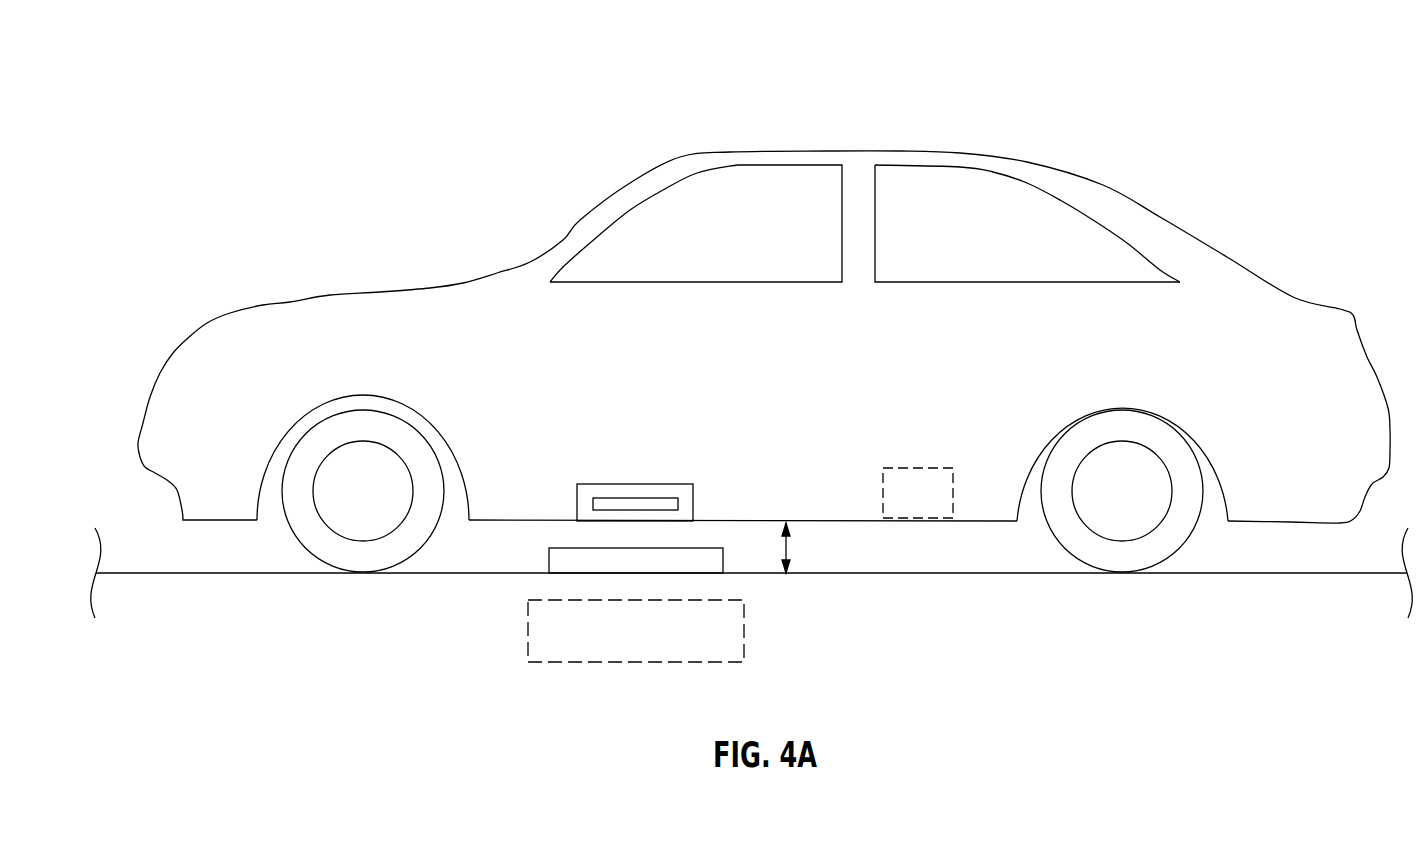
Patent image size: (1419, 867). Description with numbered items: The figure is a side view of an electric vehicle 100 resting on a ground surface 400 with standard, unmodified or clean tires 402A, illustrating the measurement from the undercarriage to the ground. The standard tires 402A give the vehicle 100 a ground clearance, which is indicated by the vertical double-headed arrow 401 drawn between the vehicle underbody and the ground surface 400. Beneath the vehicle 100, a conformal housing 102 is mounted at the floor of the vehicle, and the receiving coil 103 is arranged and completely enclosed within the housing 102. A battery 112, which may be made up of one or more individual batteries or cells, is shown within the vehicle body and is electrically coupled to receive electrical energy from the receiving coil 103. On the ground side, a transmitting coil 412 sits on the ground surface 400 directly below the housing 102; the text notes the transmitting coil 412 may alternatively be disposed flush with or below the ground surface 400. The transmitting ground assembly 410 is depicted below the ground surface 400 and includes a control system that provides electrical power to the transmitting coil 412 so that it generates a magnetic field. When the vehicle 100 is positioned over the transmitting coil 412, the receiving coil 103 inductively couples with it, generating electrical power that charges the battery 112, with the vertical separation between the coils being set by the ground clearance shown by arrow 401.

The electric vehicle 100 is at (1195, 116).
The conformal housing 102 is at (628, 484).
The receiving coil 103 is at (667, 497).
The battery 112 is at (920, 467).
The ground surface 400 is at (973, 575).
The arrow indicating ground clearance 401 is at (790, 543).
The standard tires 402A is at (1197, 525).
The ground assembly 410 is at (527, 640).
The transmitting coil 412 is at (570, 547).